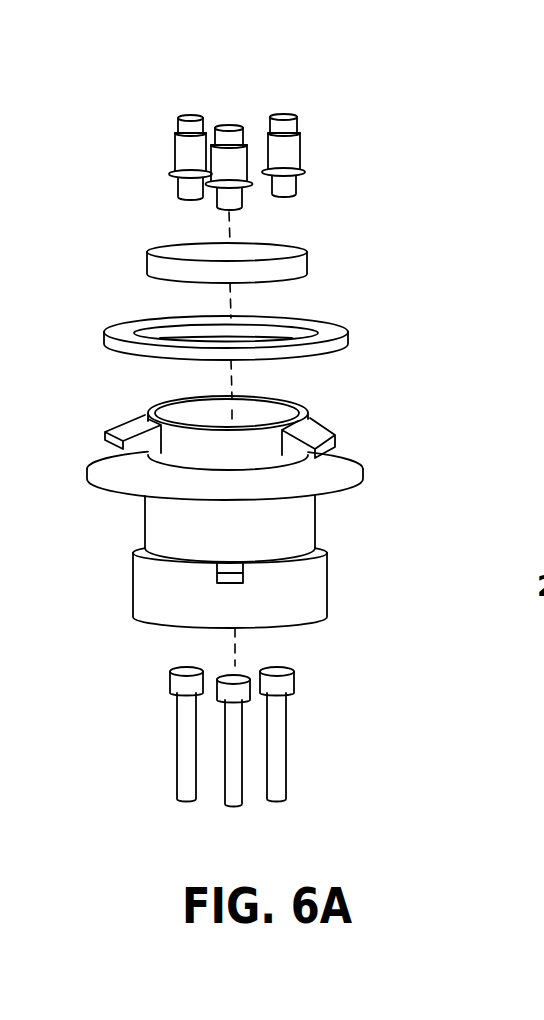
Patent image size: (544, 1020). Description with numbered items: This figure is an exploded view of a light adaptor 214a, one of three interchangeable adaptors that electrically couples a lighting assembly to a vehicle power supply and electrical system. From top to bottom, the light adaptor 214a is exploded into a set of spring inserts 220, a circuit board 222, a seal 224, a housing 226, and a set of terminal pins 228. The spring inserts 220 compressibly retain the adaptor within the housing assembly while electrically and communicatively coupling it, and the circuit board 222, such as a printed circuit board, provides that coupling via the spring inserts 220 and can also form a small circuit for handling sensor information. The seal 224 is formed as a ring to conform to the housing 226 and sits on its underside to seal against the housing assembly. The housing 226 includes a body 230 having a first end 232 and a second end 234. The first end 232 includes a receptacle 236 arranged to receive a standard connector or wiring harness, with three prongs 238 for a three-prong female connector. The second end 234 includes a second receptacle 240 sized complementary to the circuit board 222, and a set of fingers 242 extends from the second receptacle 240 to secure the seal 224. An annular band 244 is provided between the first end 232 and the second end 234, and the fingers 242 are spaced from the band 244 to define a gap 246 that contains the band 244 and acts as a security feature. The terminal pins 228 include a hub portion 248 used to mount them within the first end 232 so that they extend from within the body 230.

The light adaptor 214a is at (155, 57).
The spring inserts 220 is at (307, 158).
The circuit board 222 is at (305, 253).
The seal 224 is at (352, 330).
The housing 226 is at (266, 518).
The terminal pins 228 is at (240, 743).
The body 230 is at (158, 516).
The first end 232 is at (312, 620).
The second end 234 is at (148, 411).
The receptacle 236 is at (145, 582).
The prongs 238 is at (234, 743).
The second receptacle 240 is at (262, 413).
The fingers 242 is at (318, 437).
The annular band 244 is at (348, 479).
The gap 246 is at (333, 463).
The hub portion 248 is at (190, 680).